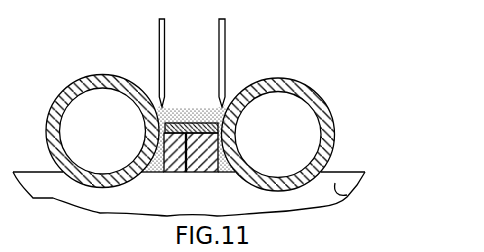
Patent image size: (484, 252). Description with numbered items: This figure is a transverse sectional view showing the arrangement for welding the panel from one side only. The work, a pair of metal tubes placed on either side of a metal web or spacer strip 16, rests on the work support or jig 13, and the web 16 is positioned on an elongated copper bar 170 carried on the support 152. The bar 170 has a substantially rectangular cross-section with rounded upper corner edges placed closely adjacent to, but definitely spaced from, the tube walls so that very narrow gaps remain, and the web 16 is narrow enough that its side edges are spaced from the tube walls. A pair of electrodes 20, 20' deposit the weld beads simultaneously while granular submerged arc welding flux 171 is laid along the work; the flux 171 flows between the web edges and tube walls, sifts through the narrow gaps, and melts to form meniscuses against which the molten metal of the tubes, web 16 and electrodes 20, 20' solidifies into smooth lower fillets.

The work support or jig 13 is at (153, 173).
The metal web or spacer strip 16 is at (184, 172).
The electrode 20 is at (142, 63).
The electrode 20' is at (249, 62).
The support 152 is at (340, 198).
The copper bar 170 is at (228, 173).
The granular submerged arc welding flux 171 is at (188, 108).